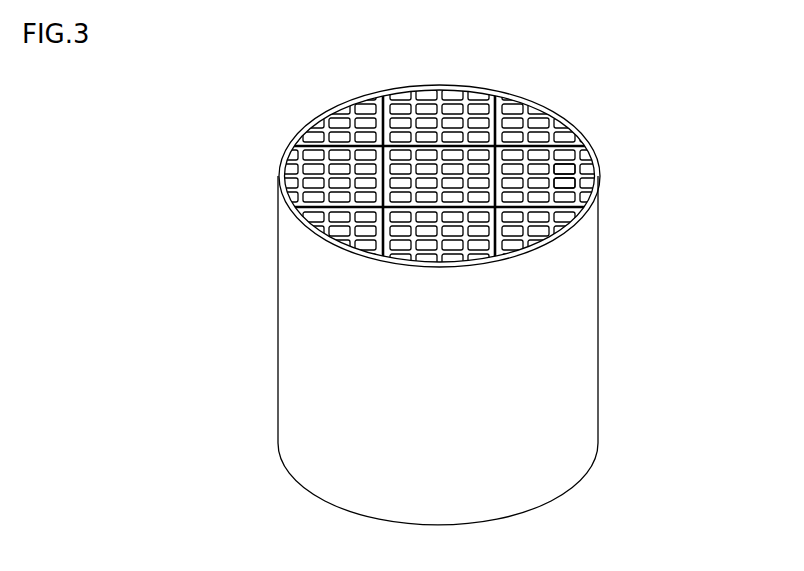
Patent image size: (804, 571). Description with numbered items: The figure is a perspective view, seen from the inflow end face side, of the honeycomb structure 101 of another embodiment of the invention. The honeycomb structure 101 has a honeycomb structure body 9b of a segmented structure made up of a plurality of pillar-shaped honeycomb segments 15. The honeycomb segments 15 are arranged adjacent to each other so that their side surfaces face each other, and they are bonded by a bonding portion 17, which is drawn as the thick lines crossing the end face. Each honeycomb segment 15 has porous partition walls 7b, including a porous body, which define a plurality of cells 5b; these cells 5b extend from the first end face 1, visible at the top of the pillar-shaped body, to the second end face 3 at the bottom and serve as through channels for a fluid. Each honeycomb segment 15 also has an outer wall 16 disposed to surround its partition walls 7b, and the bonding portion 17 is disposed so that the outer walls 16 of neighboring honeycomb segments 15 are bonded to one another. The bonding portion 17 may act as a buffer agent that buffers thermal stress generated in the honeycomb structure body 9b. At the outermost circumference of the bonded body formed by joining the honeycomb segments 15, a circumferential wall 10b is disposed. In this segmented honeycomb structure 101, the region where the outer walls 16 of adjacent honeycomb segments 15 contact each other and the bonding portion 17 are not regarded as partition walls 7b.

The honeycomb structure 101 is at (758, 84).
The first end face 1 is at (305, 122).
The second end face 3 is at (335, 508).
The cells 5b is at (540, 222).
The partition walls 7b is at (575, 175).
The honeycomb structure body 9b is at (490, 110).
The circumferential wall 10b is at (287, 157).
The honeycomb segments 15 is at (547, 173).
The outer wall 16 is at (388, 193).
The bonding portion 17 is at (385, 100).